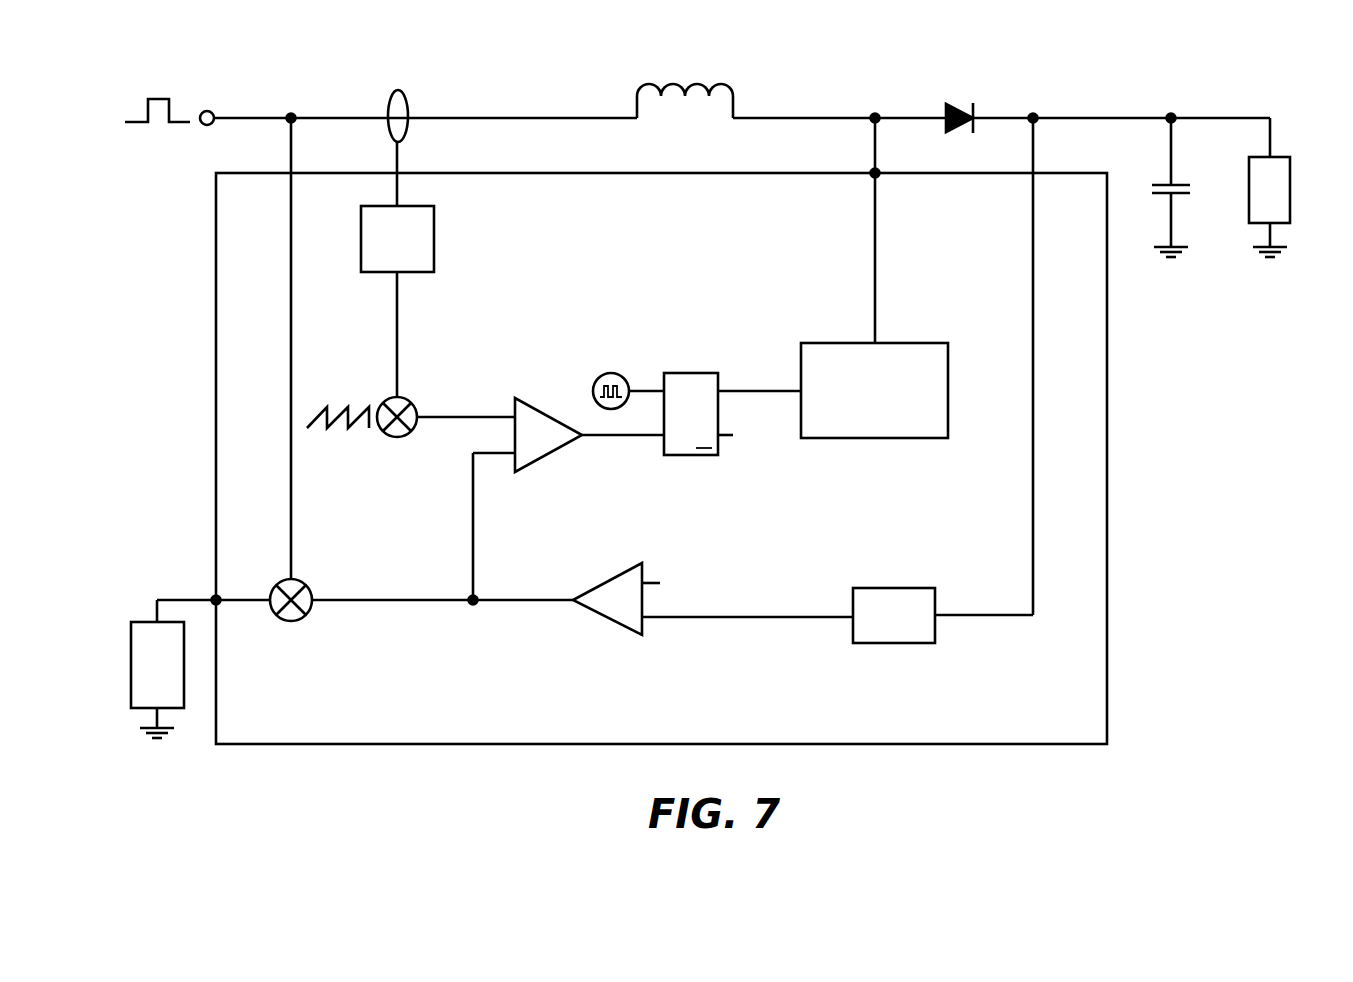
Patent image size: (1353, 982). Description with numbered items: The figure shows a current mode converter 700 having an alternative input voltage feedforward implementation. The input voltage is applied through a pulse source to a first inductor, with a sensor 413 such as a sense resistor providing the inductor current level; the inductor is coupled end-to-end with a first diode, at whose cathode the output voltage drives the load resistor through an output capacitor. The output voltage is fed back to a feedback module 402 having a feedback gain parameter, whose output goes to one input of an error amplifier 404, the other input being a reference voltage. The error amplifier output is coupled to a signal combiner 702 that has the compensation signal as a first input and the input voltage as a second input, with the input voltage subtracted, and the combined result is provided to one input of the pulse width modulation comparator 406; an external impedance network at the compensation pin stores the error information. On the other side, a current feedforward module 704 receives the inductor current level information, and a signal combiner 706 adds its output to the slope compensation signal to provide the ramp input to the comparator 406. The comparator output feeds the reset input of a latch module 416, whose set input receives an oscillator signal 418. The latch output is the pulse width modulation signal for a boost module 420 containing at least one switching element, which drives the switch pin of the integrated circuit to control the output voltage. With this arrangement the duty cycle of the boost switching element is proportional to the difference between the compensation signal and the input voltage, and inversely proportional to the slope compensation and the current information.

The current mode converter 700 is at (520, 63).
The sensor 413 is at (407, 92).
The current feedforward module 704 is at (434, 237).
The signal combiner 706 is at (406, 396).
The PWM comparator 406 is at (548, 405).
The oscillator signal 418 is at (593, 388).
The latch module 416 is at (688, 373).
The boost module 420 is at (948, 391).
The error amplifier 404 is at (607, 580).
The feedback module 402 is at (892, 588).
The signal combiner 702 is at (305, 585).